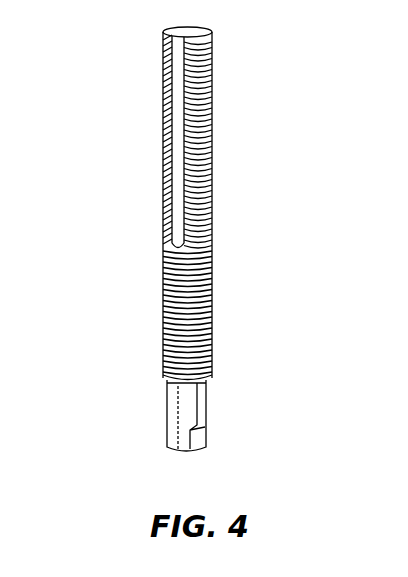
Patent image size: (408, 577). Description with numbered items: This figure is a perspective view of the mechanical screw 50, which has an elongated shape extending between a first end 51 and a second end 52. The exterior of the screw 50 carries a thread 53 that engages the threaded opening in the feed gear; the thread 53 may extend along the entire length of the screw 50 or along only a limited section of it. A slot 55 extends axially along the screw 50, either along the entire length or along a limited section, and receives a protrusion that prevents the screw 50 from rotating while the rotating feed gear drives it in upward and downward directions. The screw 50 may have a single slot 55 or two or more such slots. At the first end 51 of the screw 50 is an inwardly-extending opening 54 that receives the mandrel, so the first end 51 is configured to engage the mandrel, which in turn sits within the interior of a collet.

The mechanical screw 50 is at (103, 238).
The first end 51 is at (181, 450).
The second end 52 is at (193, 28).
The thread 53 is at (198, 193).
The inwardly-extending opening 54 is at (193, 453).
The slot 55 is at (180, 173).